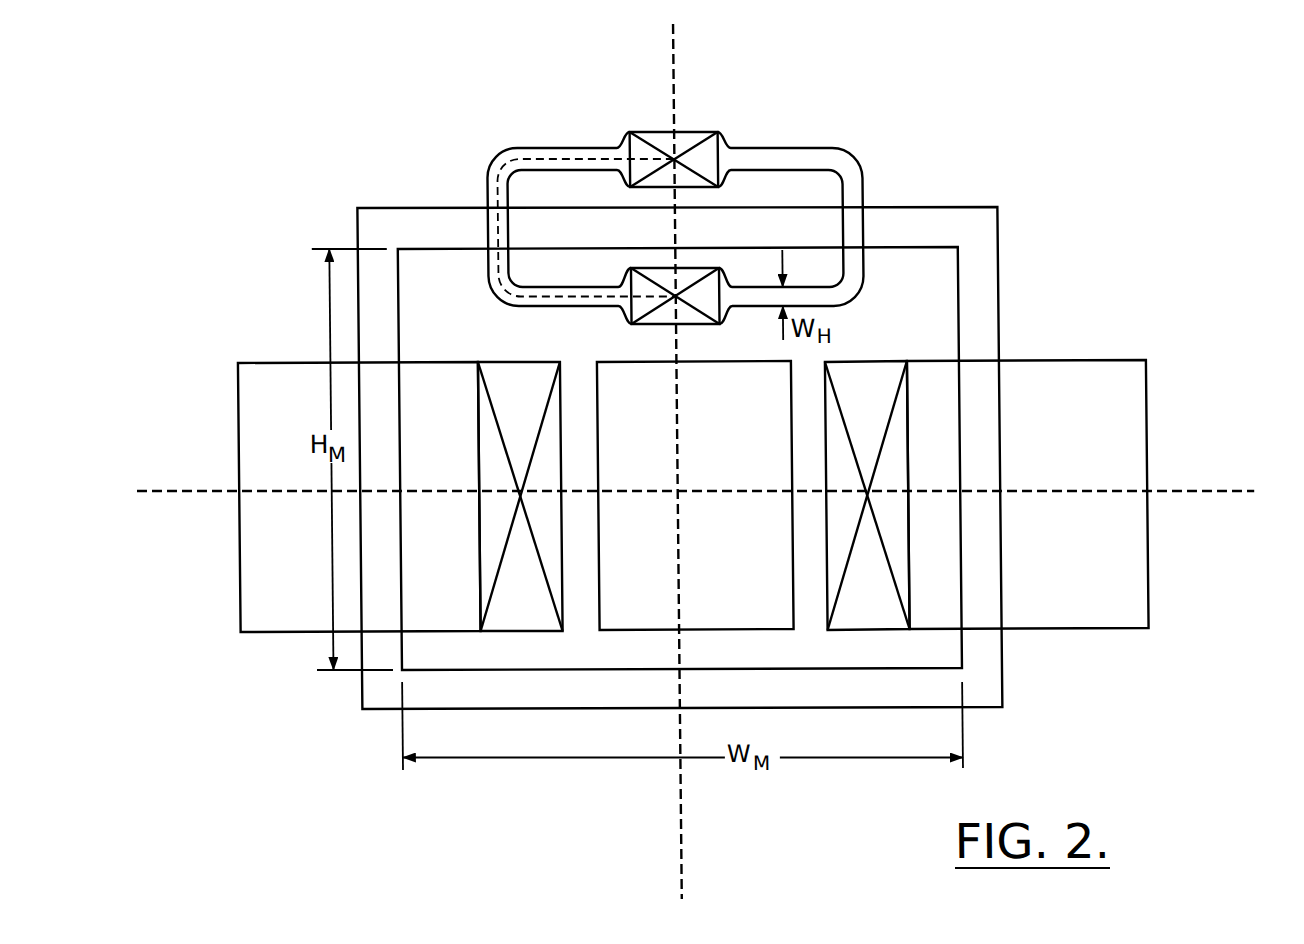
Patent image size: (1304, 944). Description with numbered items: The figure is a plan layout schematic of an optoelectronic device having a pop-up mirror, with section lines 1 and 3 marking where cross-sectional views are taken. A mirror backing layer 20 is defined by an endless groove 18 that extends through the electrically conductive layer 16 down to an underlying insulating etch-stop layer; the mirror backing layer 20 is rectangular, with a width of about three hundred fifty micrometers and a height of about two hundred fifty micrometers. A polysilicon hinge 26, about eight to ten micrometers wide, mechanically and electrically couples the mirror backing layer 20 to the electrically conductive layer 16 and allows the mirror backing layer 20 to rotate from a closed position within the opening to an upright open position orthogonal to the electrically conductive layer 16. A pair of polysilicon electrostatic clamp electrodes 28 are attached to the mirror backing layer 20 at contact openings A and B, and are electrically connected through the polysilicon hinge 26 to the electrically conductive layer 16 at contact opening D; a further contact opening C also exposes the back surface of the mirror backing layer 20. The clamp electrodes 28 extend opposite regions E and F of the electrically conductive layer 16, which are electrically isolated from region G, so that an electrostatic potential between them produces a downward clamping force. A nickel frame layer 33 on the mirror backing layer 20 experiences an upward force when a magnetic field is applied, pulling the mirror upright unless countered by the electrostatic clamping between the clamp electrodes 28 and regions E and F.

The section line 1-1' 1 is at (137, 491).
The section line 3-3' 3 is at (678, 24).
The electrically conductive layer 16 is at (1182, 747).
The endless groove 18 is at (942, 222).
The mirror backing layer 20 is at (937, 291).
The polysilicon hinge 26 is at (810, 148).
The polysilicon electrostatic clamp electrodes 28 is at (281, 396).
The nickel frame layer 33 is at (772, 396).
The contact opening A is at (524, 632).
The contact opening B is at (907, 583).
The contact opening C is at (694, 325).
The contact opening D is at (700, 130).
The region of the electrically conductive layer E is at (271, 648).
The region of the electrically conductive layer F is at (1088, 650).
The region of the electrically conductive layer G is at (660, 118).